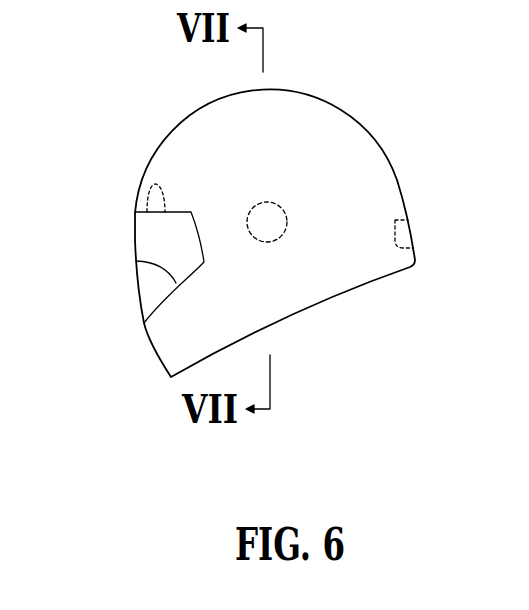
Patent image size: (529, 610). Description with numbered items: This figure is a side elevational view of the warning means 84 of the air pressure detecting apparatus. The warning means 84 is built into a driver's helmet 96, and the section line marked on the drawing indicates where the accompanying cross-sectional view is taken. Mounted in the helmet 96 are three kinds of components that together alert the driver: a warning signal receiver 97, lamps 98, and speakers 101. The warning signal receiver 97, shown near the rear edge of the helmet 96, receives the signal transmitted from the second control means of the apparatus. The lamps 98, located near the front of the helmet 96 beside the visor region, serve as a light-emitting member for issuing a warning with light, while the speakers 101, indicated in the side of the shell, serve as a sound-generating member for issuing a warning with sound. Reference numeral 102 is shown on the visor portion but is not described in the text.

The warning means 84 is at (143, 125).
The driver's helmet 96 is at (356, 117).
The warning signal receiver 97 is at (393, 235).
The lamps 98 is at (141, 193).
The speakers 101 is at (287, 213).
The visor 102 is at (135, 261).